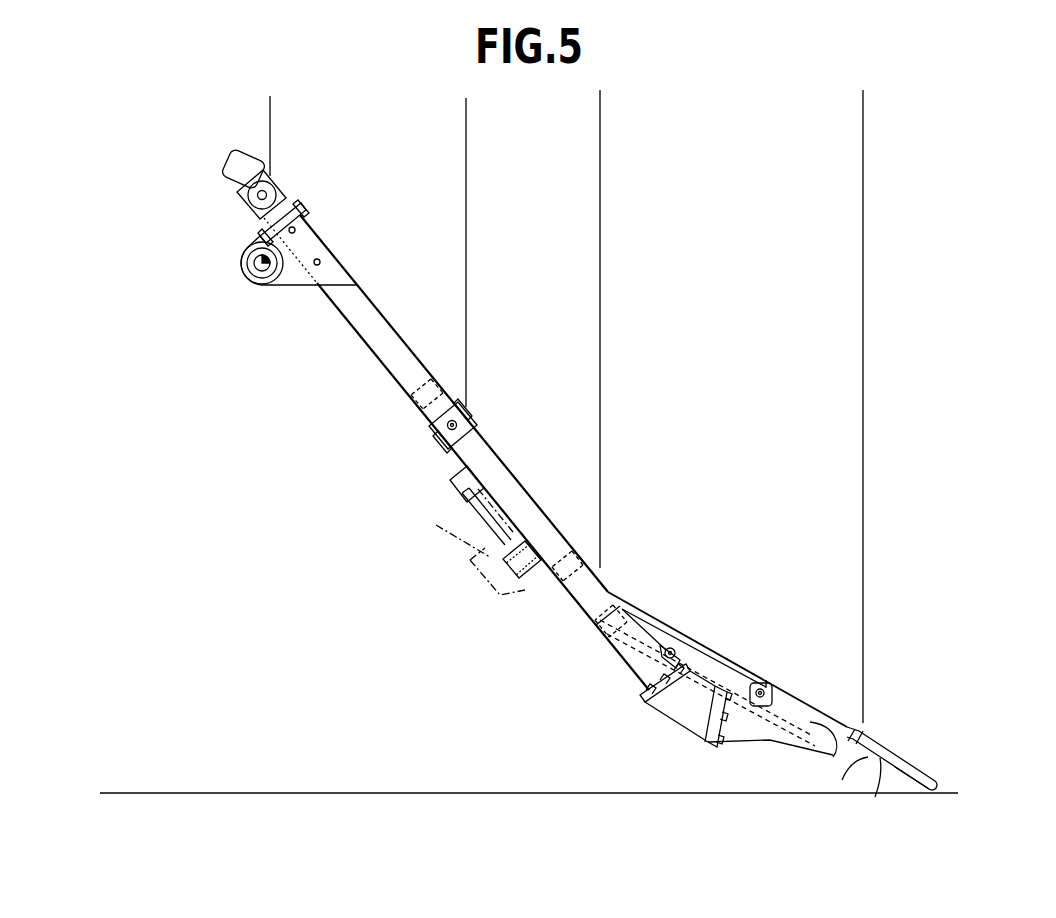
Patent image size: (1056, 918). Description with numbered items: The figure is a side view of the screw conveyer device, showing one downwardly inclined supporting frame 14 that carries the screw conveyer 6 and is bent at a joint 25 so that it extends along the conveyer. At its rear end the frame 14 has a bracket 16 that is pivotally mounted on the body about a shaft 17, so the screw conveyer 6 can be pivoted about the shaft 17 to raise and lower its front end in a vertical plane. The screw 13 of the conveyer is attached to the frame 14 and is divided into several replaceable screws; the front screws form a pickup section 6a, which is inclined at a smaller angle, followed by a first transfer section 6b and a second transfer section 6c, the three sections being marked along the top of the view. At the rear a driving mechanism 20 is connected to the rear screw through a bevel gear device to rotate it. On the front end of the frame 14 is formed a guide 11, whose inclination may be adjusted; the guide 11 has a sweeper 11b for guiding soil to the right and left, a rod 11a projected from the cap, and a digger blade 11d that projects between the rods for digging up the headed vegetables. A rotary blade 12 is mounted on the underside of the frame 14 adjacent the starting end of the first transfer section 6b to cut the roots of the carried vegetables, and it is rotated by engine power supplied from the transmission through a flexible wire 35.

The screw conveyer 6 is at (603, 550).
The pickup section 6a is at (863, 131).
The first transfer section 6b is at (600, 131).
The second transfer section 6c is at (466, 131).
The guide 11 is at (896, 741).
The rod 11a is at (912, 767).
The sweeper 11b is at (878, 785).
The digger blade 11d is at (858, 787).
The rotary blade 12 is at (557, 587).
The screw 13 is at (730, 649).
The supporting frame 14 is at (382, 350).
The bracket 16 is at (282, 280).
The shaft 17 is at (262, 263).
The driving mechanism 20 is at (237, 168).
The joint 25 is at (680, 720).
The flexible wire 35 is at (443, 530).